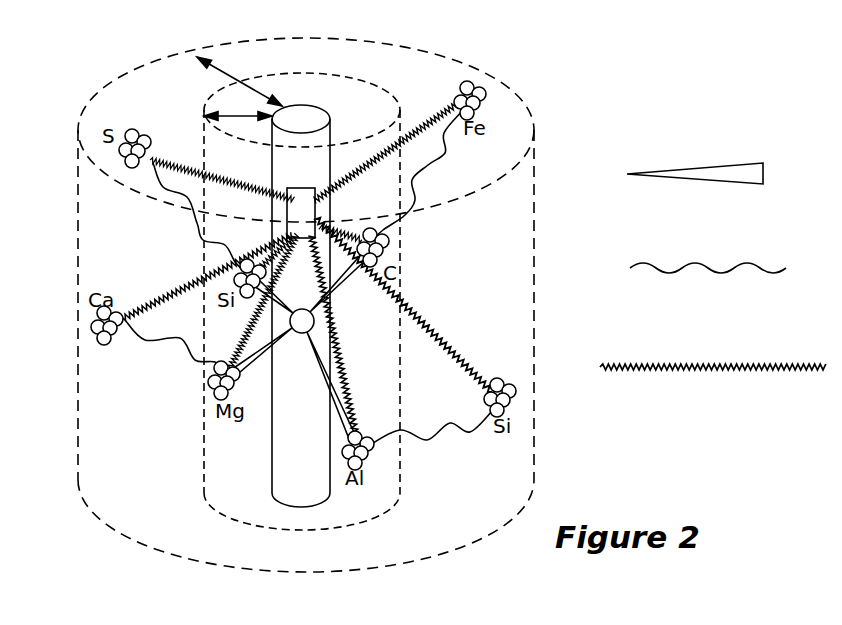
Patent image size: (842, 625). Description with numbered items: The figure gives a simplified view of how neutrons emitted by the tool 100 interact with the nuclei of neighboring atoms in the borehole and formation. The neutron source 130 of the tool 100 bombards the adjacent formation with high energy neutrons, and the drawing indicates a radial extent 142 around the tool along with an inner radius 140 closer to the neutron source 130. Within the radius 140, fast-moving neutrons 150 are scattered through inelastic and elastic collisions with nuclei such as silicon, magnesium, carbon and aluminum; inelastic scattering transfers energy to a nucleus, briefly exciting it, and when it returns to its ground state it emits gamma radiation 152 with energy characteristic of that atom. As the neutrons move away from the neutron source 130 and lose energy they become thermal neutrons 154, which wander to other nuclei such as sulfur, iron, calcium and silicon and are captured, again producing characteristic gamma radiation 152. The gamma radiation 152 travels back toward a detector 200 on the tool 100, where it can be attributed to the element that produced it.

The tool 100 is at (322, 97).
The neutron source 130 is at (312, 323).
The radius 140 is at (240, 114).
The outer region dimension 142 is at (233, 80).
The fast-moving neutrons 150 is at (713, 192).
The gamma radiation 152 is at (715, 383).
The thermal neutrons 154 is at (706, 287).
The detector 200 is at (301, 188).